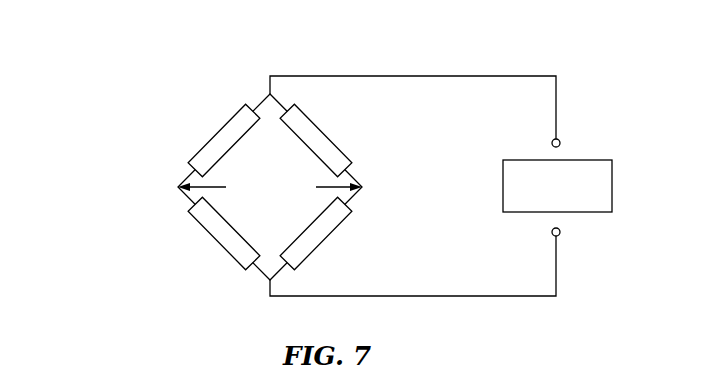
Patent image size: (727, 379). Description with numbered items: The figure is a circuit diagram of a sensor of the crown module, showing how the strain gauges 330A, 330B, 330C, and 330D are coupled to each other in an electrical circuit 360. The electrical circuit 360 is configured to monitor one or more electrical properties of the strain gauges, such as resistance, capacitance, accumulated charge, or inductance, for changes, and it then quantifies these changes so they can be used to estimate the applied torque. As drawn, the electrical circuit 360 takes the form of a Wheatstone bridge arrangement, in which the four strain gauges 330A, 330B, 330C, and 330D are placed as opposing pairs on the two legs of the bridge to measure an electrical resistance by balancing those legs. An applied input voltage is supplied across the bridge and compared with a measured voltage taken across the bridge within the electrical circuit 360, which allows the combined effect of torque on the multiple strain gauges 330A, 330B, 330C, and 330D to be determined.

The electrical circuit 360 is at (120, 29).
The strain gauge 330A is at (205, 130).
The strain gauge 330B is at (205, 247).
The strain gauge 330C is at (336, 129).
The strain gauge 330D is at (336, 246).